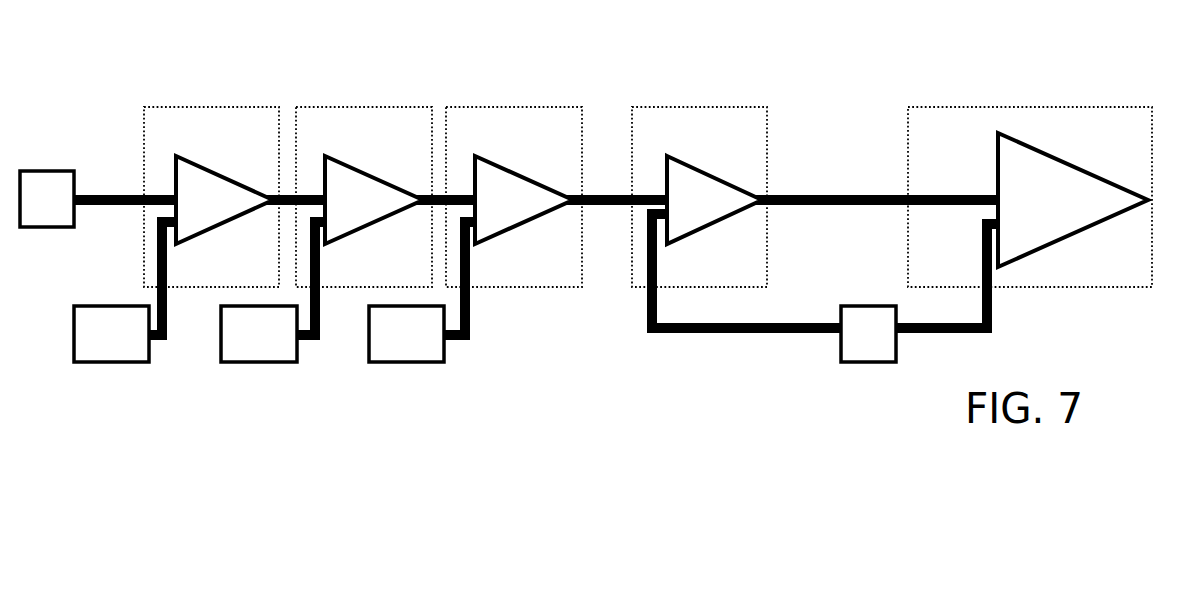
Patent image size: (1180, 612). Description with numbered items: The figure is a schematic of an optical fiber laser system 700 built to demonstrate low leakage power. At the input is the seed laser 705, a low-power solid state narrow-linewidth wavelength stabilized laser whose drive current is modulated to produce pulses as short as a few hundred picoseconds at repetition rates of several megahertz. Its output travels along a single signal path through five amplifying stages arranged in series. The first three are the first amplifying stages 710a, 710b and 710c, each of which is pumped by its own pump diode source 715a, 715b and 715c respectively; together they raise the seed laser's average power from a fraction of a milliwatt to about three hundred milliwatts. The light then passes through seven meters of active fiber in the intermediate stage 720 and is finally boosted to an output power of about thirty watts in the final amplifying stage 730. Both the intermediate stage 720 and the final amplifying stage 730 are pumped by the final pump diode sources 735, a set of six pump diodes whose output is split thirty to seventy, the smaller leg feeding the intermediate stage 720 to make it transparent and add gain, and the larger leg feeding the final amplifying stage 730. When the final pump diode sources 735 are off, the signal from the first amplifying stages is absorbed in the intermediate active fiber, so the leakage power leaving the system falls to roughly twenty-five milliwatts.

The optical fiber laser system 700 is at (92, 82).
The seed laser 705 is at (64, 210).
The first amplifying stage 710a is at (177, 107).
The first amplifying stage 710b is at (330, 107).
The first amplifying stage 710c is at (480, 107).
The pump diode source 715a is at (137, 346).
The pump diode source 715b is at (285, 346).
The pump diode source 715c is at (433, 346).
The intermediate stage 720 is at (672, 107).
The final amplifying stage 730 is at (1038, 107).
The final pump diode sources 735 is at (887, 346).